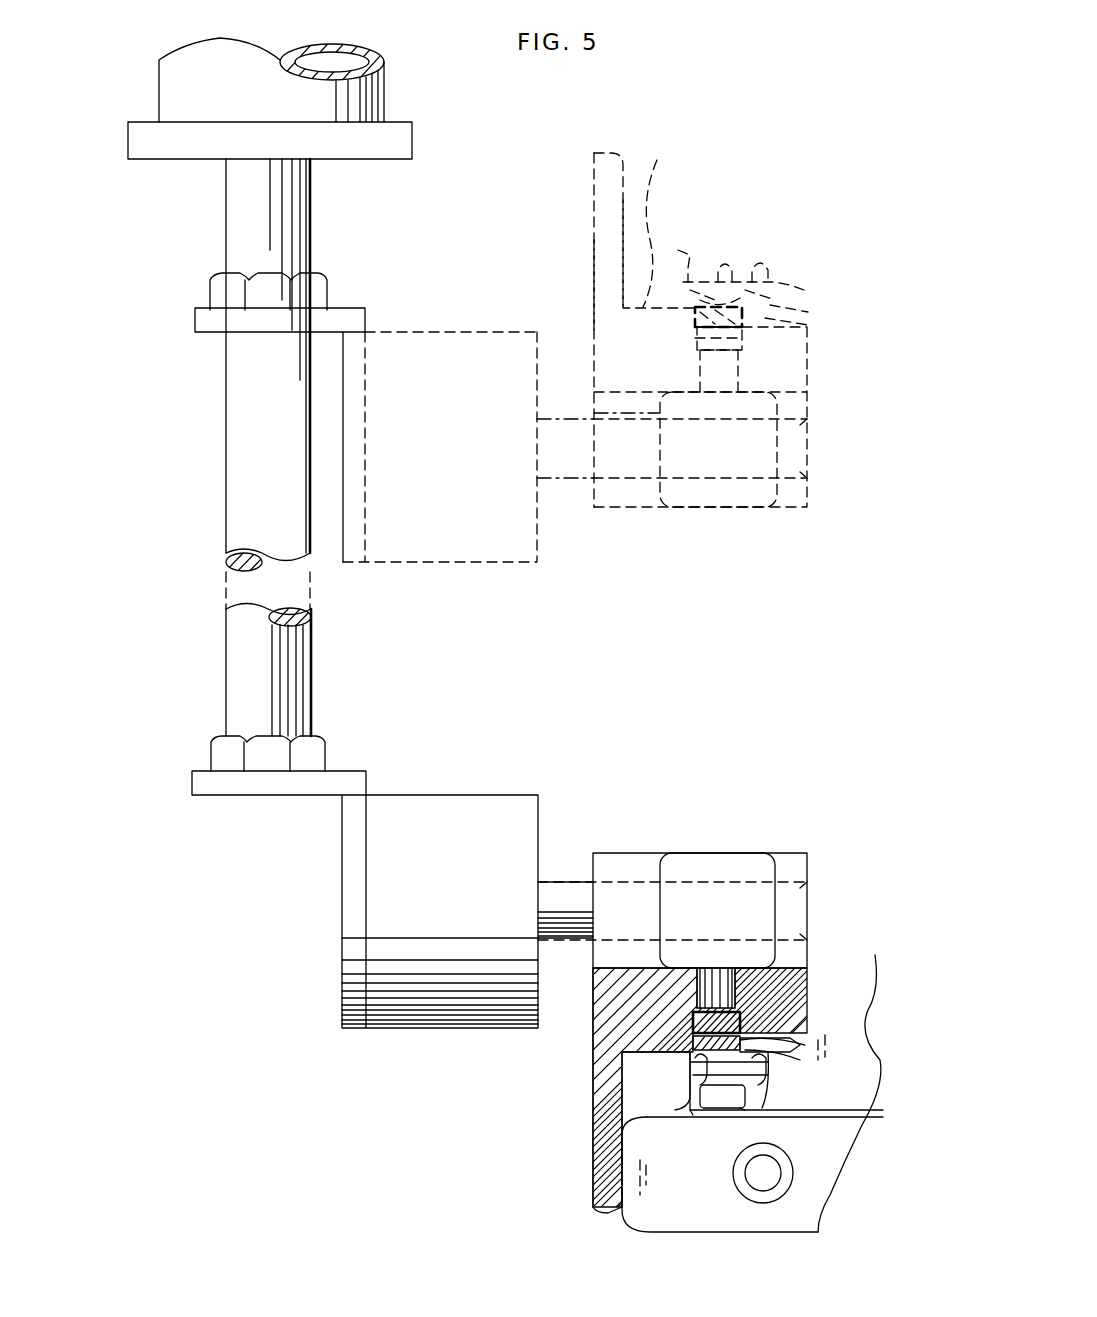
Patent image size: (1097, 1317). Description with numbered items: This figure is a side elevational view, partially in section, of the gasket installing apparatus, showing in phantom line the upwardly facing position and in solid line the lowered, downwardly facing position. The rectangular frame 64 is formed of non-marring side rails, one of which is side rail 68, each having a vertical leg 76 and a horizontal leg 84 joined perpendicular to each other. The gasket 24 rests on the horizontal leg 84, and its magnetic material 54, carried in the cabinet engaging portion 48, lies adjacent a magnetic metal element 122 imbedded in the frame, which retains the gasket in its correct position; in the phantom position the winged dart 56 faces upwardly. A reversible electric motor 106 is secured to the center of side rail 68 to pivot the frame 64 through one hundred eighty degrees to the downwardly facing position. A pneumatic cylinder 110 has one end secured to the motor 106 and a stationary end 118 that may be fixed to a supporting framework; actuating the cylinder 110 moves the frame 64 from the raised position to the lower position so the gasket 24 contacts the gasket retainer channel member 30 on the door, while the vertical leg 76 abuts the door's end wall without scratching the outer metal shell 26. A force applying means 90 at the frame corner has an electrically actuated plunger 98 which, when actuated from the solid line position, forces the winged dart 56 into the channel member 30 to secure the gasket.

The gasket 24 is at (776, 263).
The outer metal shell 26 is at (640, 1208).
The gasket retainer channel member 30 is at (693, 1112).
The cabinet engaging portion 48 is at (730, 329).
The magnetic material 54 is at (708, 275).
The winged dart 56 is at (730, 260).
The frame 64 is at (584, 182).
The side rail 68 is at (594, 232).
The vertical leg 76 is at (623, 256).
The horizontal leg 84 is at (558, 1100).
The force applying means 90 is at (705, 490).
The plunger 98 is at (730, 370).
The reversible electric motor 106 is at (438, 550).
The pneumatic cylinder 110 is at (238, 485).
The stationary end 118 is at (172, 102).
The magnetic metal element 122 is at (697, 338).